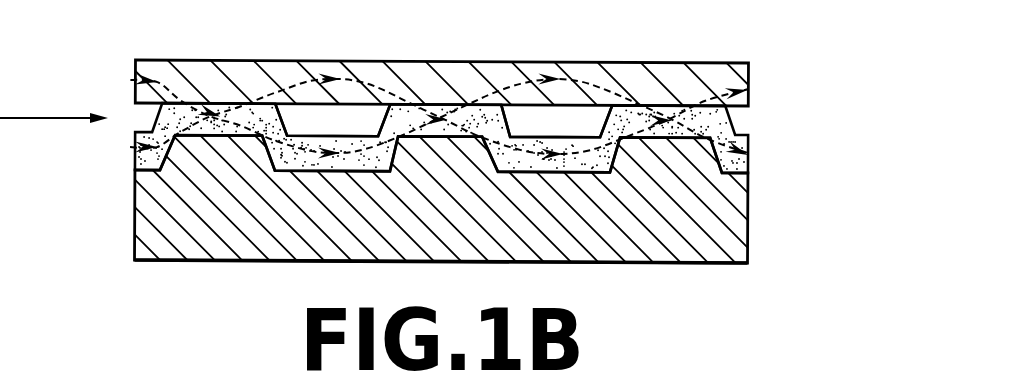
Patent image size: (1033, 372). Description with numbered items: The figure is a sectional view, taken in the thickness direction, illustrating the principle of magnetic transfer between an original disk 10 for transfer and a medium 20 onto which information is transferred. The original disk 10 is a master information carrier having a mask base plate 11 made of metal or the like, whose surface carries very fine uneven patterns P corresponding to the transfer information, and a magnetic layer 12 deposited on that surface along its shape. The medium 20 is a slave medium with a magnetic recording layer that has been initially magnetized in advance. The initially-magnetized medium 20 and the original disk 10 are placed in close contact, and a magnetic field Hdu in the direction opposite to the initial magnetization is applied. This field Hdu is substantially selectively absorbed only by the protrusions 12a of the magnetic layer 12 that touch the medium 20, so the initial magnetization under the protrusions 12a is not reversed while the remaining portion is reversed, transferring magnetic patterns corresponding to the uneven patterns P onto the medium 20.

The original disk for transfer 10 is at (460, 135).
The mask base plate 11 is at (746, 203).
The magnetic layer 12 is at (759, 160).
The protrusions 12a is at (663, 115).
The medium onto which information is transferred 20 is at (730, 70).
The uneven patterns P is at (153, 138).
The magnetic field for transfer Hdu is at (54, 136).